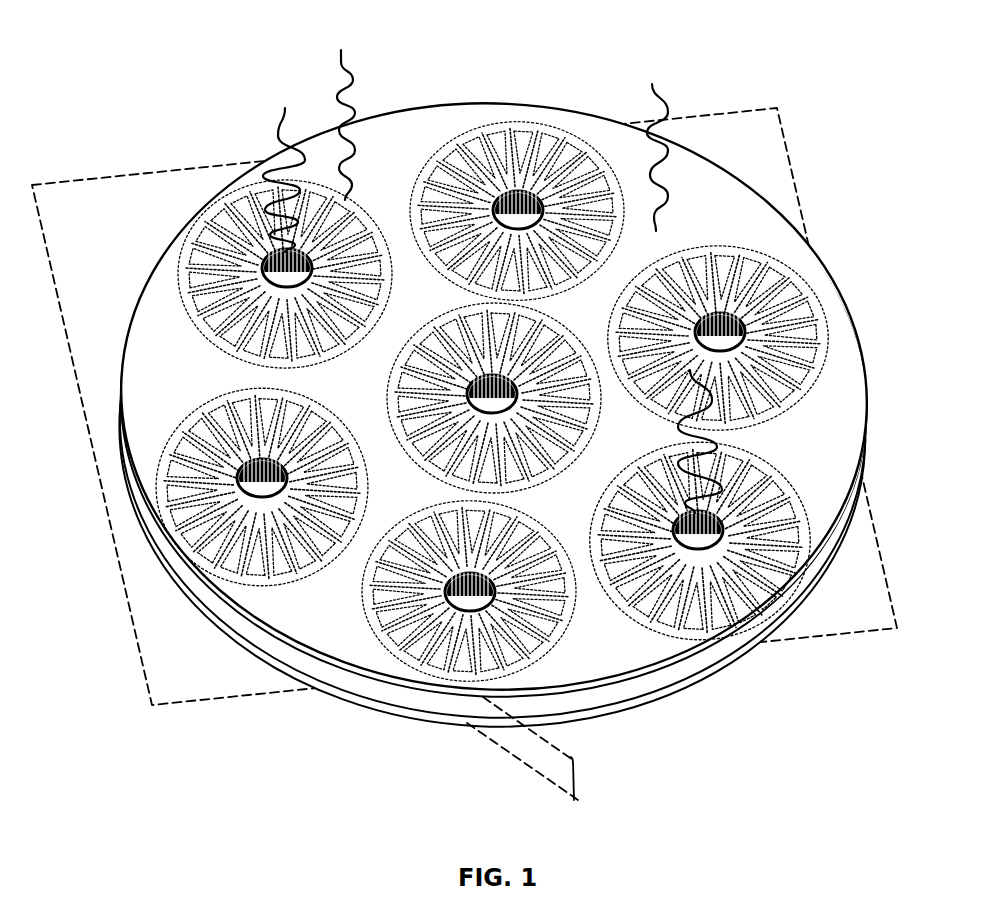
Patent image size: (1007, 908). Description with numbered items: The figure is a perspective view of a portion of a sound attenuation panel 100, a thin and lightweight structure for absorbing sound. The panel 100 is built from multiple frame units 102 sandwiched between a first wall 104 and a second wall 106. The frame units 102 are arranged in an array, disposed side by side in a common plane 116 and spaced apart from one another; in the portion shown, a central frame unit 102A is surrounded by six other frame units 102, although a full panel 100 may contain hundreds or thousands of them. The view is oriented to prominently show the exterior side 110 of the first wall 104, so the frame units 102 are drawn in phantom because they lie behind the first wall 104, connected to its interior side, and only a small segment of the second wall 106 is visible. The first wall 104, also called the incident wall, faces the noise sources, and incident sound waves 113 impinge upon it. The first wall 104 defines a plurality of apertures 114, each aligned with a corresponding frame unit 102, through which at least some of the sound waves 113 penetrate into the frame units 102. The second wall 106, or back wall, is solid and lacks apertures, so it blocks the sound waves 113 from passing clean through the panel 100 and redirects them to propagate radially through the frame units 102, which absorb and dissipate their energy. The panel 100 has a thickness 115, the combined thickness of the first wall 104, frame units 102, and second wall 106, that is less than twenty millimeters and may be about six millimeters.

The sound attenuation panel 100 is at (147, 107).
The frame units 102 is at (473, 137).
The central frame unit 102A is at (558, 357).
The first wall 104 is at (124, 350).
The second wall 106 is at (305, 688).
The exterior side 110 is at (147, 305).
The incident sound waves 113 is at (341, 62).
The apertures 114 is at (260, 262).
The thickness 115 is at (580, 786).
The common plane 116 is at (841, 632).